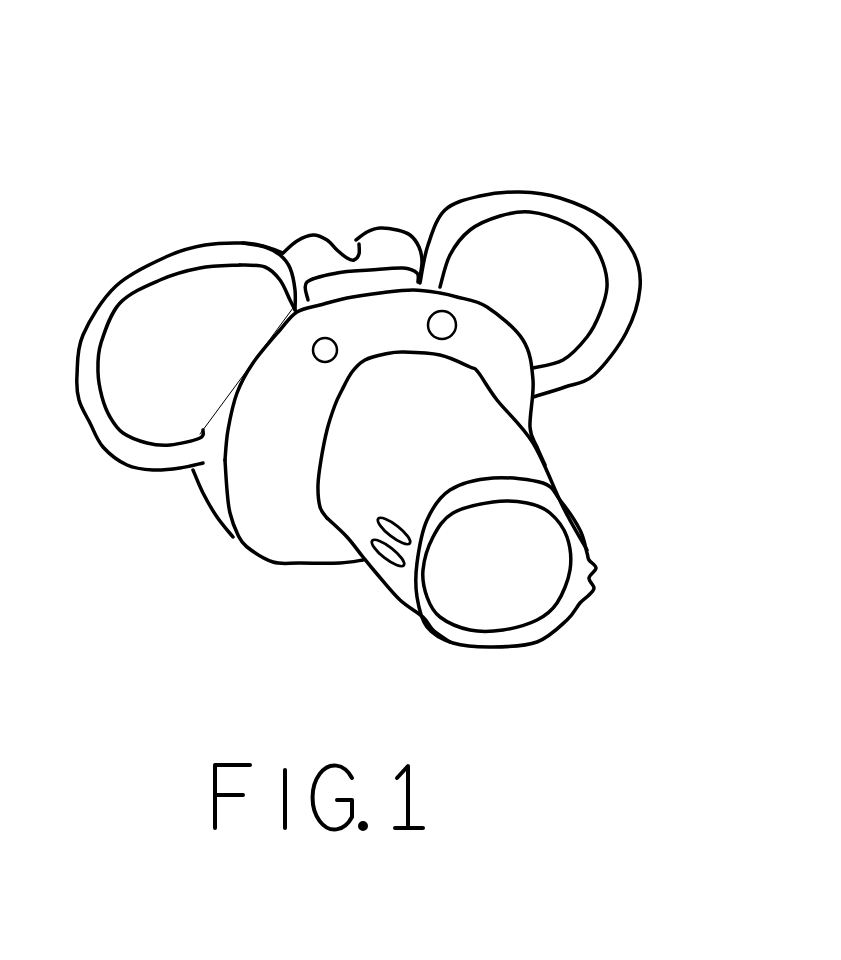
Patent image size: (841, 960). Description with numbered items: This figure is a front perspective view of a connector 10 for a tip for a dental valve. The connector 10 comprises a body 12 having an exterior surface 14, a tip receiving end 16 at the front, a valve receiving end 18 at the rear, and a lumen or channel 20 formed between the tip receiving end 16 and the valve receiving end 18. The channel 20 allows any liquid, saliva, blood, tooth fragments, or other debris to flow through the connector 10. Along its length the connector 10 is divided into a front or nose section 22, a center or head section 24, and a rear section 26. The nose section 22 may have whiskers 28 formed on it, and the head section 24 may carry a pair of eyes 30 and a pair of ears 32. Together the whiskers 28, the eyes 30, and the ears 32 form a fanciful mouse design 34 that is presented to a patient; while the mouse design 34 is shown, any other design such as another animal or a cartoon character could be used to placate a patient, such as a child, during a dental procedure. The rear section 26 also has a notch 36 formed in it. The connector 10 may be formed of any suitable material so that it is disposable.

The connector 10 is at (406, 93).
The body 12 is at (235, 576).
The exterior surface 14 is at (525, 458).
The tip receiving end 16 is at (522, 678).
The valve receiving end 18 is at (300, 215).
The channel 20 is at (540, 580).
The nose section 22 is at (362, 520).
The head section 24 is at (280, 533).
The rear section 26 is at (400, 249).
The whiskers 28 is at (397, 527).
The eyes 30 is at (323, 353).
The ears 32 is at (178, 307).
The mouse design 34 is at (161, 499).
The notch 36 is at (350, 250).